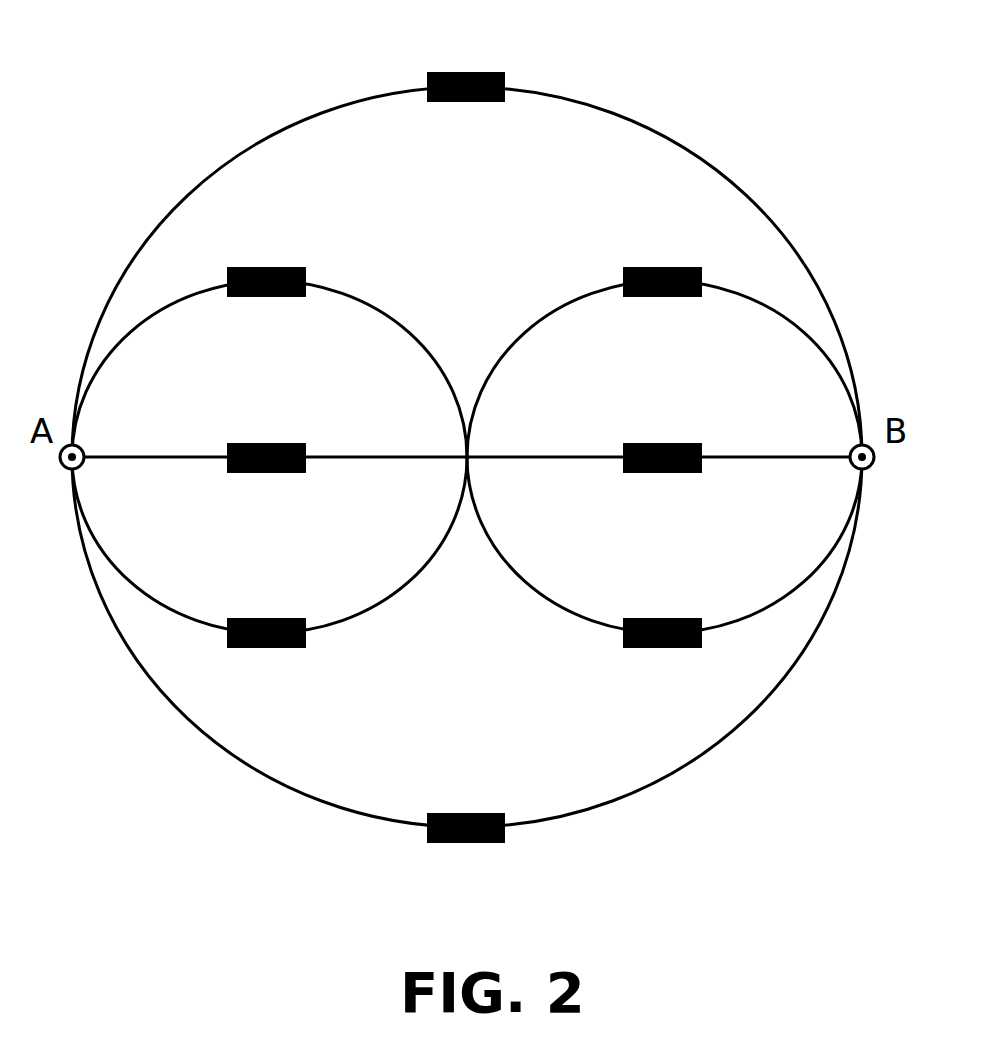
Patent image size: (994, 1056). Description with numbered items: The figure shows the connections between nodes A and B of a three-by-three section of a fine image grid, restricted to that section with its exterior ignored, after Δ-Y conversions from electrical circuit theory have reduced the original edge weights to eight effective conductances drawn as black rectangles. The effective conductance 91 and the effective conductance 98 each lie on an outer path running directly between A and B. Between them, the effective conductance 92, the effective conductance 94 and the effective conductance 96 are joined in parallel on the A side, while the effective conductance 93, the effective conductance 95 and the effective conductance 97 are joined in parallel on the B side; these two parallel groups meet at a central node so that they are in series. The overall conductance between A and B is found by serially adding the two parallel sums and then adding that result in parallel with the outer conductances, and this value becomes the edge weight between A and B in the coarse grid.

The effective conductance q1 91 is at (466, 61).
The effective conductance q2 92 is at (266, 256).
The effective conductance q3 93 is at (662, 256).
The effective conductance q4 94 is at (266, 431).
The effective conductance q5 95 is at (662, 431).
The effective conductance q6 96 is at (266, 607).
The effective conductance q7 97 is at (662, 607).
The effective conductance q8 98 is at (466, 802).